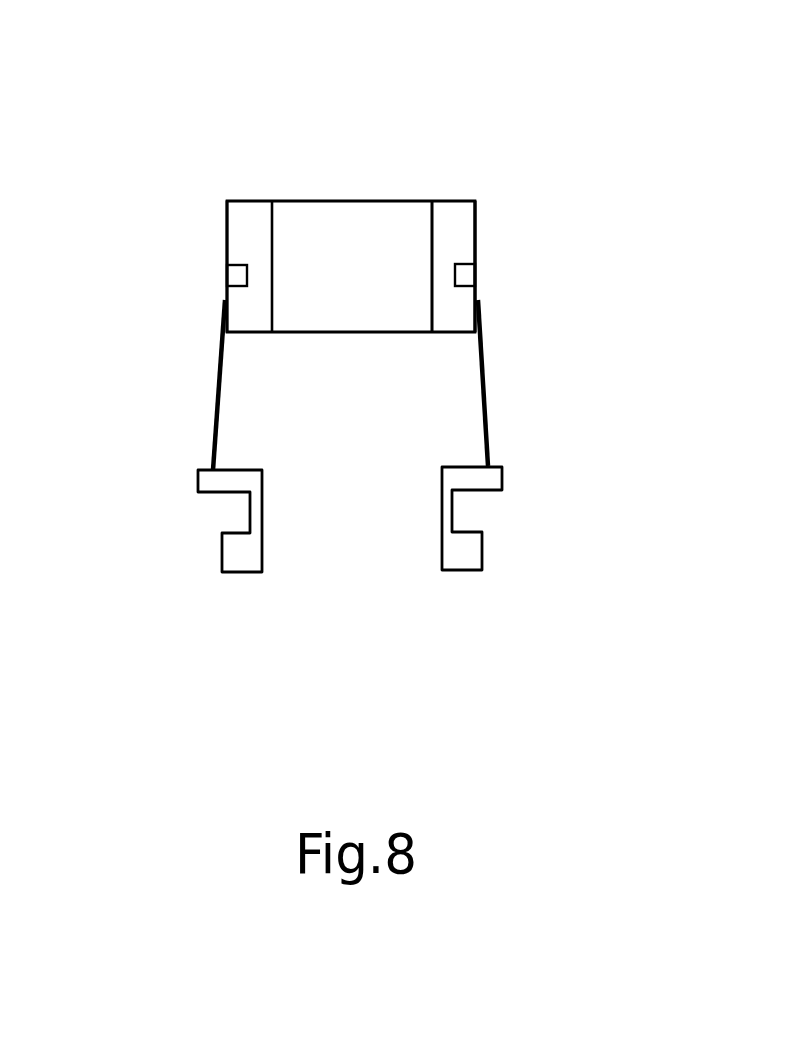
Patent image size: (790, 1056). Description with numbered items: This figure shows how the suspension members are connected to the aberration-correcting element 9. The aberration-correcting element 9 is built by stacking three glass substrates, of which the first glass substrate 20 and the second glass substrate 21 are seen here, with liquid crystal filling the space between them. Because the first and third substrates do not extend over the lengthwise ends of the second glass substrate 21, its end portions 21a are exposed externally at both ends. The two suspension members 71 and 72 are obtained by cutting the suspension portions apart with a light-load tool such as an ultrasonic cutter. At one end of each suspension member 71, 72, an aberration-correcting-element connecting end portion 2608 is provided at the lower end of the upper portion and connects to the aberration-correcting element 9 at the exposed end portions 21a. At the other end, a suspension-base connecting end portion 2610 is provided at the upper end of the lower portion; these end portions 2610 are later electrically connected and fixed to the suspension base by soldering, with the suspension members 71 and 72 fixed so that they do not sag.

The aberration-correcting element 9 is at (343, 199).
The first glass substrate 20 is at (400, 213).
The second glass substrate 21 is at (460, 249).
The end portion 21a is at (233, 228).
The end portion for connecting the aberration-correcting element 2608 is at (230, 273).
The end portion for connecting the suspension base 2610 is at (233, 575).
The suspension member 71 is at (485, 393).
The suspension member 72 is at (215, 387).